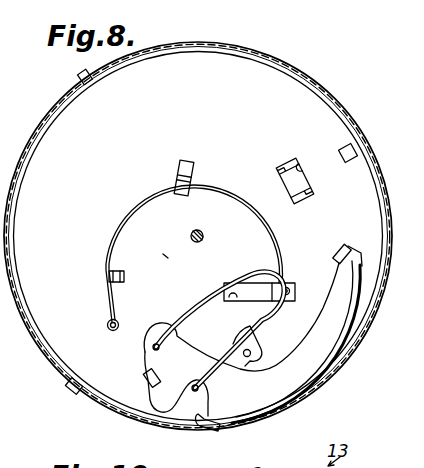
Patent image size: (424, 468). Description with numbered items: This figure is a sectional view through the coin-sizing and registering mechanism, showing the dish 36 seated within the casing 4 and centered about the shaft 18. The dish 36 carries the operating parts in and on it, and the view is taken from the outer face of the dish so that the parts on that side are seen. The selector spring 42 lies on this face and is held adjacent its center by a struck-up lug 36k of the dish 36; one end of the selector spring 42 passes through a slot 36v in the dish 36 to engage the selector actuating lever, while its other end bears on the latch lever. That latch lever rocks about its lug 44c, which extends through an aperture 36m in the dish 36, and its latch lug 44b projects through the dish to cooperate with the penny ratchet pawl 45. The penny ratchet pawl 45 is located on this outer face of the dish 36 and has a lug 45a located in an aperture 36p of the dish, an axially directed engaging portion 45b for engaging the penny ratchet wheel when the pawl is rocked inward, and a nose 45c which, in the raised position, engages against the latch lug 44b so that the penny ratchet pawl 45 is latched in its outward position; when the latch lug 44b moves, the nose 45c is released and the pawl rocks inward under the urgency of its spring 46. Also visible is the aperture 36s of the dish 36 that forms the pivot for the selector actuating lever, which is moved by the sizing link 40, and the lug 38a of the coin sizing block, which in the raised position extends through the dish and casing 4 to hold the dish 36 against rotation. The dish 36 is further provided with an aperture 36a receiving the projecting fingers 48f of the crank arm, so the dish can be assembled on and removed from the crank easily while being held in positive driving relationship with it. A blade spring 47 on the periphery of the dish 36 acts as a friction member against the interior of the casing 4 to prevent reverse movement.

The casing 4 is at (340, 113).
The shaft 18 is at (204, 219).
The dish 36 is at (290, 82).
The aperture 36a is at (320, 149).
The struck-up lug 36k is at (176, 166).
The aperture 36m is at (116, 272).
The aperture 36p is at (340, 249).
The aperture 36s is at (236, 338).
The slot 36v is at (275, 282).
The lug 38a is at (79, 76).
The sizing link 40 is at (79, 392).
The selector spring 42 is at (200, 178).
The latch lug 44b is at (146, 368).
The lug 44c is at (113, 283).
The penny ratchet pawl 45 is at (325, 340).
The lug 45a is at (347, 248).
The axially directed engaging portion 45b is at (236, 427).
The nose 45c is at (140, 385).
The spring 46 is at (210, 293).
The blade spring 47 is at (203, 432).
The projecting fingers 48f is at (285, 165).